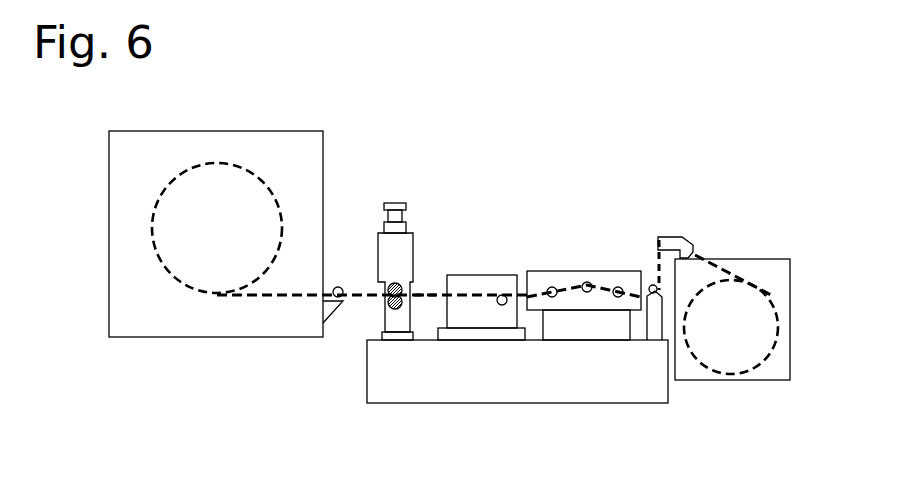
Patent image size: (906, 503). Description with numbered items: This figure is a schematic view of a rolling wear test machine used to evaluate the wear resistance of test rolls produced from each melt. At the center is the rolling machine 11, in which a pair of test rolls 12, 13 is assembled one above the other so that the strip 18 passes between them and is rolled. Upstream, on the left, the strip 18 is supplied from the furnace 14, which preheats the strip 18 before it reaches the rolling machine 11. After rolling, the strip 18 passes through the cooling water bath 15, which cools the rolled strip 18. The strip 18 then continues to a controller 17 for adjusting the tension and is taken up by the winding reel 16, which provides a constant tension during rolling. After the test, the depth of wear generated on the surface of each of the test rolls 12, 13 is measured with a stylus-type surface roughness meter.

The rolling machine 11 is at (378, 245).
The test roll 12 is at (400, 284).
The test roll 13 is at (425, 297).
The furnace 14 is at (296, 175).
The cooling water bath 15 is at (481, 313).
The winding reel 16 is at (752, 272).
The controller 17 is at (582, 277).
The strip 18 is at (440, 297).